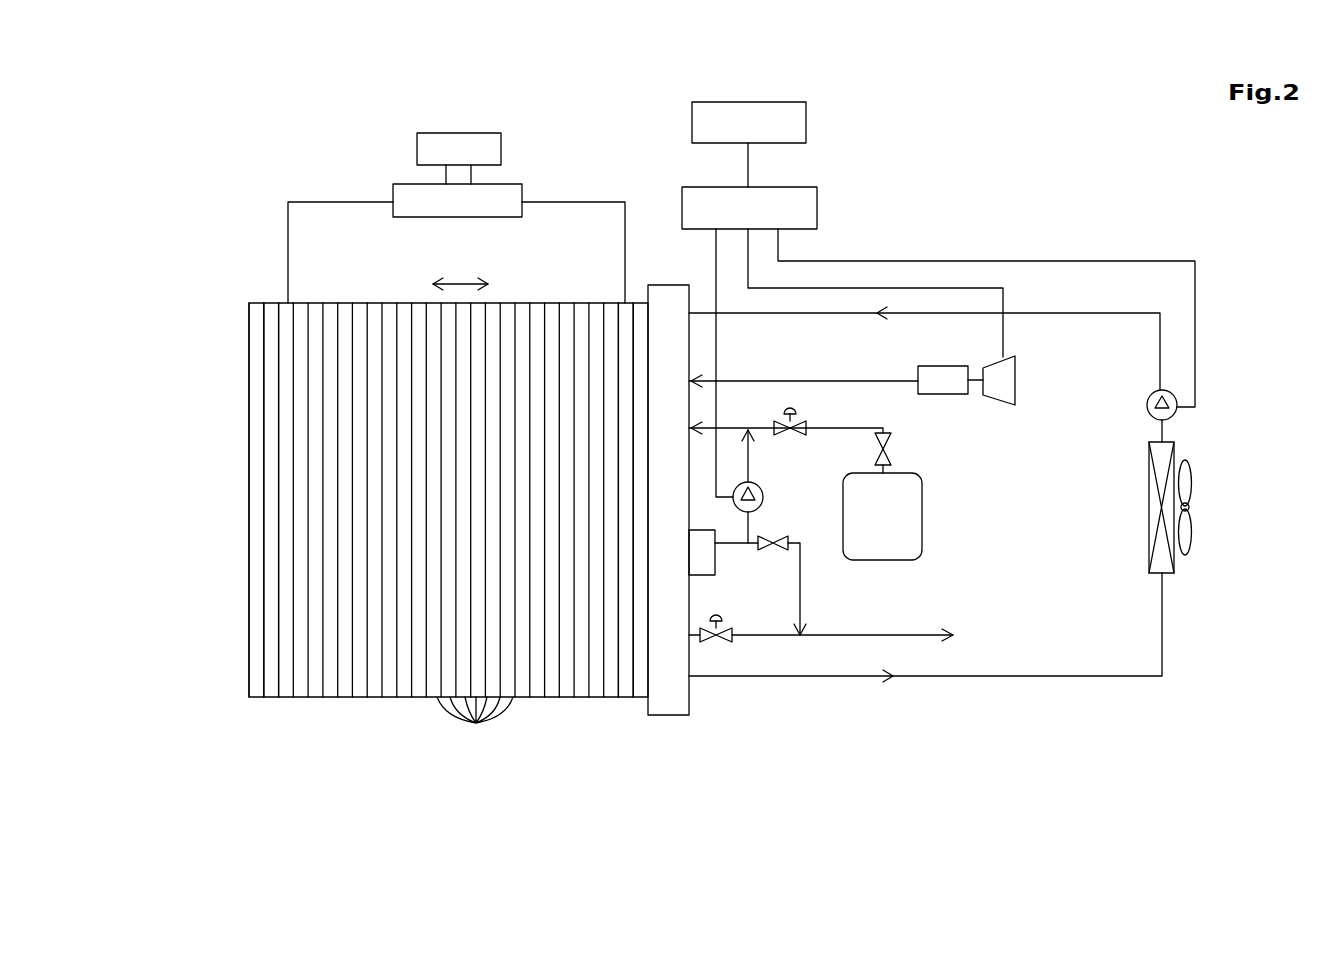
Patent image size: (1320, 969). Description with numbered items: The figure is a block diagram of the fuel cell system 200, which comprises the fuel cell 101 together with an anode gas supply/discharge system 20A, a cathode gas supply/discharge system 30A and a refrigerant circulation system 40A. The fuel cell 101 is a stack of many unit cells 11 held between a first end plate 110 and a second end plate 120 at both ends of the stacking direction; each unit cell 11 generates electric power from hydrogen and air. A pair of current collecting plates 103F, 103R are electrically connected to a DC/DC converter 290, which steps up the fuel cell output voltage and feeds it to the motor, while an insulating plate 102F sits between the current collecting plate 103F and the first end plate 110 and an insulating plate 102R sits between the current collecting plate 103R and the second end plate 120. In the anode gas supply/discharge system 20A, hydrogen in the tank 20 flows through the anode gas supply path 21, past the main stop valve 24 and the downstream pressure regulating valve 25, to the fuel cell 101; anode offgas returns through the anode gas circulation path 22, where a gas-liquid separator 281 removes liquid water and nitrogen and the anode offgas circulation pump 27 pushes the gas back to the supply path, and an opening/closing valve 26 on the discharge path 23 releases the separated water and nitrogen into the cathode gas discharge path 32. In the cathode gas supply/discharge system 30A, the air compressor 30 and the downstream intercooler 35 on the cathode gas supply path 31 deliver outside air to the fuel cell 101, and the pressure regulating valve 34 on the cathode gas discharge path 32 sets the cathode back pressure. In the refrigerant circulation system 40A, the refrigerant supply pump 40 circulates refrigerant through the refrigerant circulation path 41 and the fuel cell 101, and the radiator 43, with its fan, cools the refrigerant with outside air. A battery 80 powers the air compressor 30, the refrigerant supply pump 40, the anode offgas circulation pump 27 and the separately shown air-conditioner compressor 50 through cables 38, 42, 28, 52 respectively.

The DC/DC converter 290 is at (516, 184).
The air-conditioner compressor 50 is at (806, 122).
The cable 52 is at (749, 163).
The battery 80 is at (817, 207).
The cable 28 is at (716, 262).
The cable 38 is at (770, 287).
The cable 42 is at (993, 259).
The fuel cell system 200 is at (1065, 215).
The refrigerant circulation path 41 is at (1043, 312).
The cathode gas supply path 31 is at (806, 379).
The intercooler 35 is at (942, 366).
The air compressor 30 is at (995, 362).
The cathode gas supply/discharge system 30A is at (948, 424).
The refrigerant supply pump 40 is at (1147, 408).
The radiator 43 is at (1174, 450).
The refrigerant circulation system 40A is at (1185, 580).
The anode gas supply path 21 is at (841, 427).
The pressure regulating valve 25 is at (770, 427).
The main stop valve 24 is at (892, 436).
The tank 20 is at (885, 561).
The anode gas supply/discharge system 20A is at (795, 478).
The anode gas circulation path 22 is at (749, 466).
The anode offgas circulation pump 27 is at (764, 499).
The gas-liquid separator 281 is at (716, 573).
The opening/closing valve 26 is at (782, 551).
The discharge path 23 is at (802, 582).
The pressure regulating valve 34 is at (720, 645).
The cathode gas discharge path 32 is at (833, 636).
The fuel cell 101 is at (541, 747).
The unit cells 11 is at (448, 528).
The first end plate 110 is at (258, 699).
The insulating plate 102F is at (274, 699).
The current collecting plate 103F is at (292, 699).
The current collecting plate 103R is at (627, 699).
The insulating plate 102R is at (640, 699).
The second end plate 120 is at (668, 716).